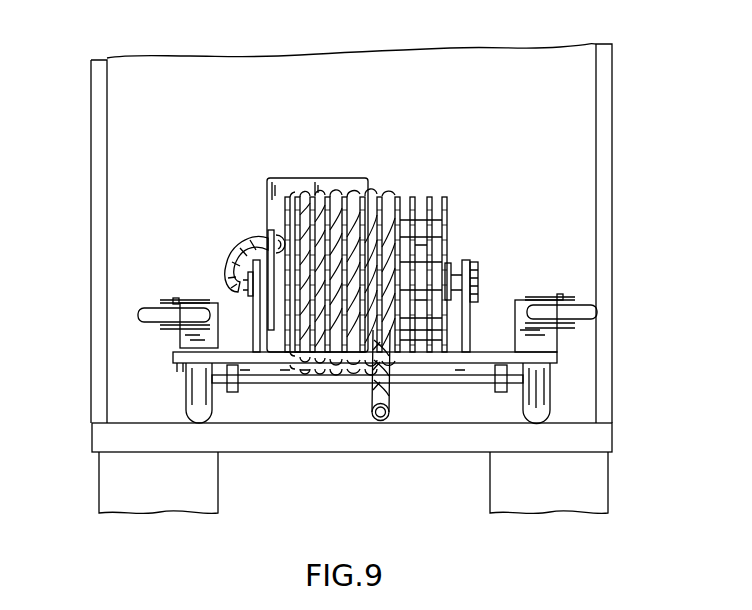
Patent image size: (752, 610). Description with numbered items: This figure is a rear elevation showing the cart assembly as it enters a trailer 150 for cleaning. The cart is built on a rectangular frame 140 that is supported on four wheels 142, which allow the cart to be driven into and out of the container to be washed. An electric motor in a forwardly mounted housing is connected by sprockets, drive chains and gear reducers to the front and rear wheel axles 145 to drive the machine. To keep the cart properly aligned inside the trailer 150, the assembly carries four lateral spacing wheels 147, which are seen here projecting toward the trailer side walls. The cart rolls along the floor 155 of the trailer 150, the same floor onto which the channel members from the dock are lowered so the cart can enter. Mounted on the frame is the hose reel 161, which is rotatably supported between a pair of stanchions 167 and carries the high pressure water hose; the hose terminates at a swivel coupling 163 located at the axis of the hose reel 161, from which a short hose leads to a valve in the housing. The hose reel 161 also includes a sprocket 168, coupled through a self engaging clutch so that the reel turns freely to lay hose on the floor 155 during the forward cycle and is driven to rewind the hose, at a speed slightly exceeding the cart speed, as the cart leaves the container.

The rectangular frame 140 is at (262, 355).
The wheels 142 is at (540, 397).
The wheel axles 145 is at (470, 383).
The lateral spacing wheels 147 is at (568, 307).
The trailer 150 is at (605, 216).
The floor 155 is at (580, 425).
The hose reel 161 is at (445, 217).
The swivel coupling 163 is at (268, 244).
The stanchions 167 is at (466, 323).
The sprocket 168 is at (272, 315).